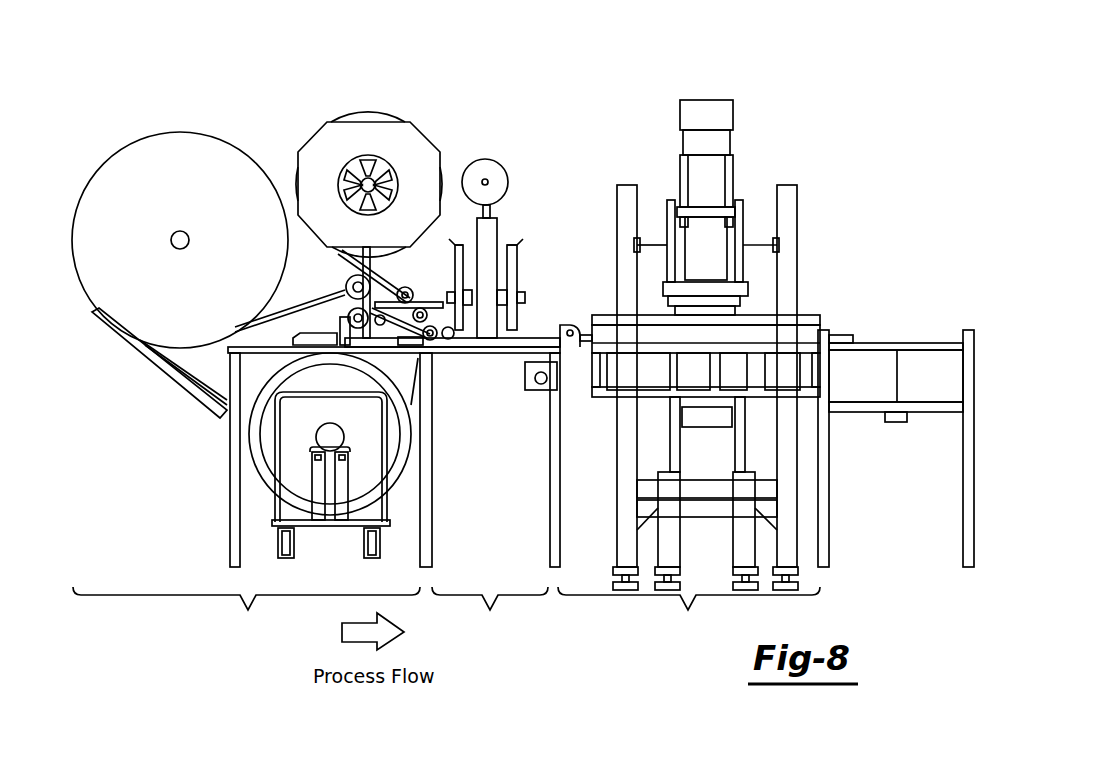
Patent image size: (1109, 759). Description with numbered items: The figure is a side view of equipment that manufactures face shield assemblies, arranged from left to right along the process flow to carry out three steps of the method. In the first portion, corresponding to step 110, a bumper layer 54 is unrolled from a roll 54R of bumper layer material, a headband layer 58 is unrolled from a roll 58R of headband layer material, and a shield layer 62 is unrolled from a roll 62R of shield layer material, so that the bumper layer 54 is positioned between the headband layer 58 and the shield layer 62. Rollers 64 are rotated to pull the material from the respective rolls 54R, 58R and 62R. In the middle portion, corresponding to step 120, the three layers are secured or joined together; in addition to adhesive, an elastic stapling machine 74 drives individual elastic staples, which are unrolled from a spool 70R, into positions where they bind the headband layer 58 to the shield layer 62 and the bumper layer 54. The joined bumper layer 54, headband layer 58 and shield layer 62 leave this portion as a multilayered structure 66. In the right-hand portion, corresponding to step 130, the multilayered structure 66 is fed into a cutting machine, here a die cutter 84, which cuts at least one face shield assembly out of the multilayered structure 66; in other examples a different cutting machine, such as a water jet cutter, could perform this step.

The roll of bumper layer material 54R is at (148, 158).
The bumper layer 54 is at (308, 305).
The roll of headband layer material 58R is at (390, 135).
The headband layer 58 is at (398, 276).
The rollers 64 is at (345, 290).
The spool of elastic staples 70R is at (509, 187).
The elastic stapling machine 74 is at (499, 158).
The multilayered structure 66 is at (573, 335).
The shield layer 62 is at (418, 392).
The roll of shield layer material 62R is at (275, 447).
The die cutter 84 is at (731, 80).
The positioning step 110 is at (246, 614).
The securing step 120 is at (490, 614).
The cutting step 130 is at (689, 614).